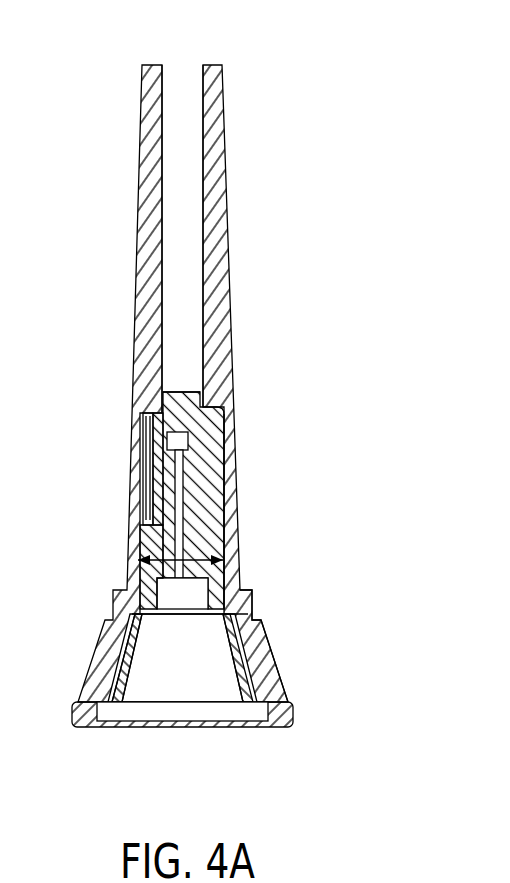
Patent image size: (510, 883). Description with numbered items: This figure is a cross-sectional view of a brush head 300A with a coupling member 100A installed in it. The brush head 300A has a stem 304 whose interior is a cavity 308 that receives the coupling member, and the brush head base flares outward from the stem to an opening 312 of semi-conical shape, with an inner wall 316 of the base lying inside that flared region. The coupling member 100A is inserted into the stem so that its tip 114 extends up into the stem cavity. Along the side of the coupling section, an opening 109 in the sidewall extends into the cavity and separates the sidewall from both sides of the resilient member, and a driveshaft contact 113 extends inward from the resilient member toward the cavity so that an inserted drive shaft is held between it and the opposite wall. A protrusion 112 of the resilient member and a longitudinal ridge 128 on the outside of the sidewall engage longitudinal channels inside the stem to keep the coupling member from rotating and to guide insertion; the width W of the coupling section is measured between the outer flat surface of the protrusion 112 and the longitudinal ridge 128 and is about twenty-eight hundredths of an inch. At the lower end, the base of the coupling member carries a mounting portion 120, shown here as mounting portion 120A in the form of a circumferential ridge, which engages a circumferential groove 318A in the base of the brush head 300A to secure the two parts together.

The brush head 300A is at (120, 92).
The stem 304 is at (215, 115).
The lumen 308 is at (195, 245).
The tip 114 is at (182, 388).
The coupling member 100A is at (200, 403).
The longitudinal ridge 128 is at (225, 442).
The opening 109 is at (173, 515).
The driveshaft contact 113 is at (170, 472).
The protrusion 112 is at (138, 547).
The width W is at (200, 560).
The inner wall 316 is at (120, 627).
The mounting portion 120A is at (112, 675).
The circumferential groove 318A is at (264, 677).
The mounting portion 120 is at (199, 677).
The opening 312 is at (126, 725).